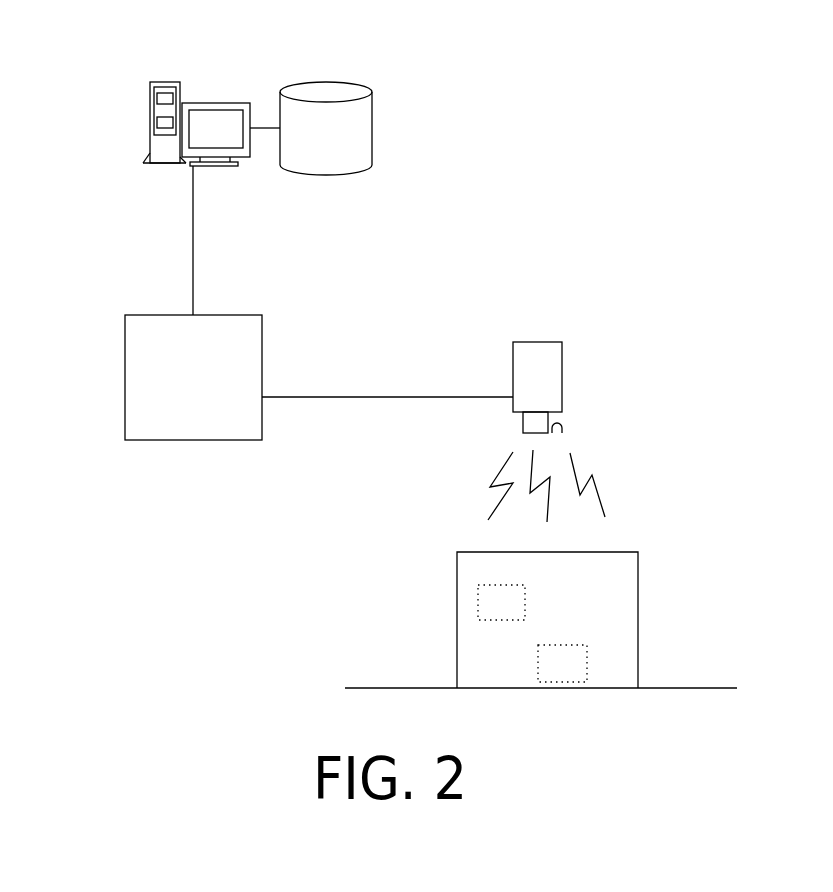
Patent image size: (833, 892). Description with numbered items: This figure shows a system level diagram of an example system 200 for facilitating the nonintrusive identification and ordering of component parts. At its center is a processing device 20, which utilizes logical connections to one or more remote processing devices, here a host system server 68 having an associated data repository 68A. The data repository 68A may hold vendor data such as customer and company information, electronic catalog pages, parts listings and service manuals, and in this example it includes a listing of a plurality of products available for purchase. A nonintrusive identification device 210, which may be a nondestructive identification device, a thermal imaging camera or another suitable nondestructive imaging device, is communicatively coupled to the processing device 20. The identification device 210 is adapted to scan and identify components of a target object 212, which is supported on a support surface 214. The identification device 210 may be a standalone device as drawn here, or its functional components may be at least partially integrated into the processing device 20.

The processing device 20 is at (250, 442).
The host system server 68 is at (217, 102).
The data repository 68A is at (365, 128).
The system 200 is at (555, 200).
The nonintrusive identification device 210 is at (562, 378).
The target object 212 is at (628, 548).
The support surface 214 is at (682, 685).